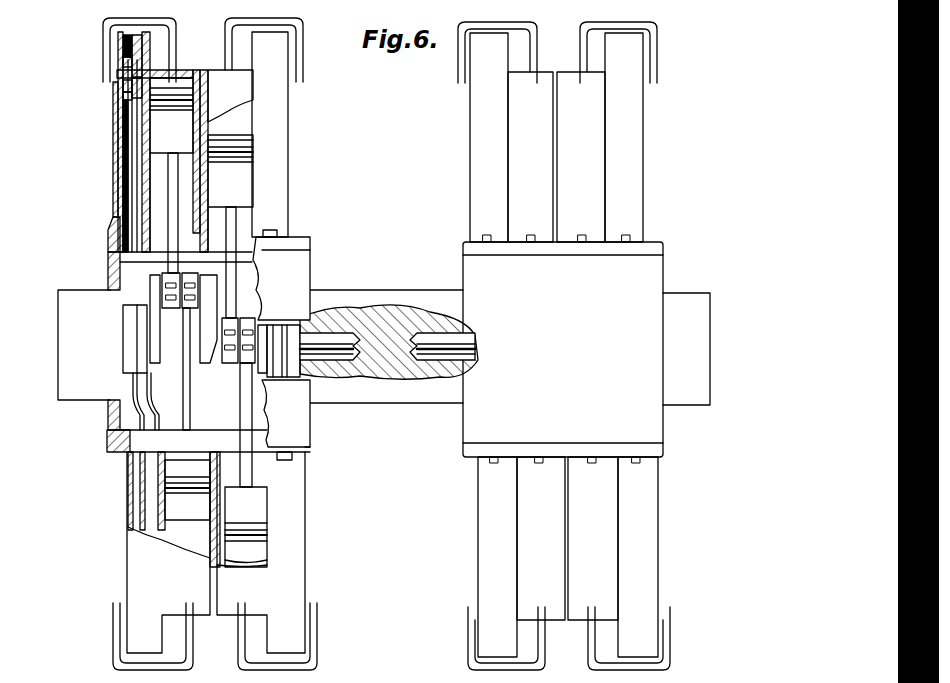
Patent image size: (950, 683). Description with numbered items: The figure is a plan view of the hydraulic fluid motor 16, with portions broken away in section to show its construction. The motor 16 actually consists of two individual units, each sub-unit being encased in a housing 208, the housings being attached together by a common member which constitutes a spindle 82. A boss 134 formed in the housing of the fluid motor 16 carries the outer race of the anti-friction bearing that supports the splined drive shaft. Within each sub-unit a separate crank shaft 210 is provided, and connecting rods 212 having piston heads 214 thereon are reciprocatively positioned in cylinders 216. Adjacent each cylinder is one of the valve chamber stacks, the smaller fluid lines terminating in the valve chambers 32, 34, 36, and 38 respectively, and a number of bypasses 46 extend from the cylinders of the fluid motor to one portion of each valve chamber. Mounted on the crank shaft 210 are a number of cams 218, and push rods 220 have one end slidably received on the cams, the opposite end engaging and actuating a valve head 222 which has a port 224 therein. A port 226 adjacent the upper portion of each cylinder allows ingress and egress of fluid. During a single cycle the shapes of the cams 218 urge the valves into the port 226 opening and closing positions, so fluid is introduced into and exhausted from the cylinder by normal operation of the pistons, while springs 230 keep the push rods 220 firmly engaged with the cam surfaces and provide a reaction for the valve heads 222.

The hydraulic fluid motor 16 is at (395, 288).
The valve chamber 32 is at (288, 104).
The valve chamber 34 is at (118, 122).
The valve chamber 36 is at (297, 553).
The valve chamber 38 is at (130, 563).
The bypass 46 is at (170, 44).
The spindle 82 is at (364, 404).
The boss 134 is at (76, 395).
The housing 208 is at (281, 345).
The crank shaft 210 is at (323, 338).
The connecting rod 212 is at (238, 232).
The piston head 214 is at (238, 351).
The cylinder 216 is at (232, 96).
The cam 218 is at (120, 334).
The push rod 220 is at (118, 207).
The valve head 222 is at (122, 96).
The port 224 is at (118, 82).
The port 226 is at (205, 60).
The spring 230 is at (122, 38).